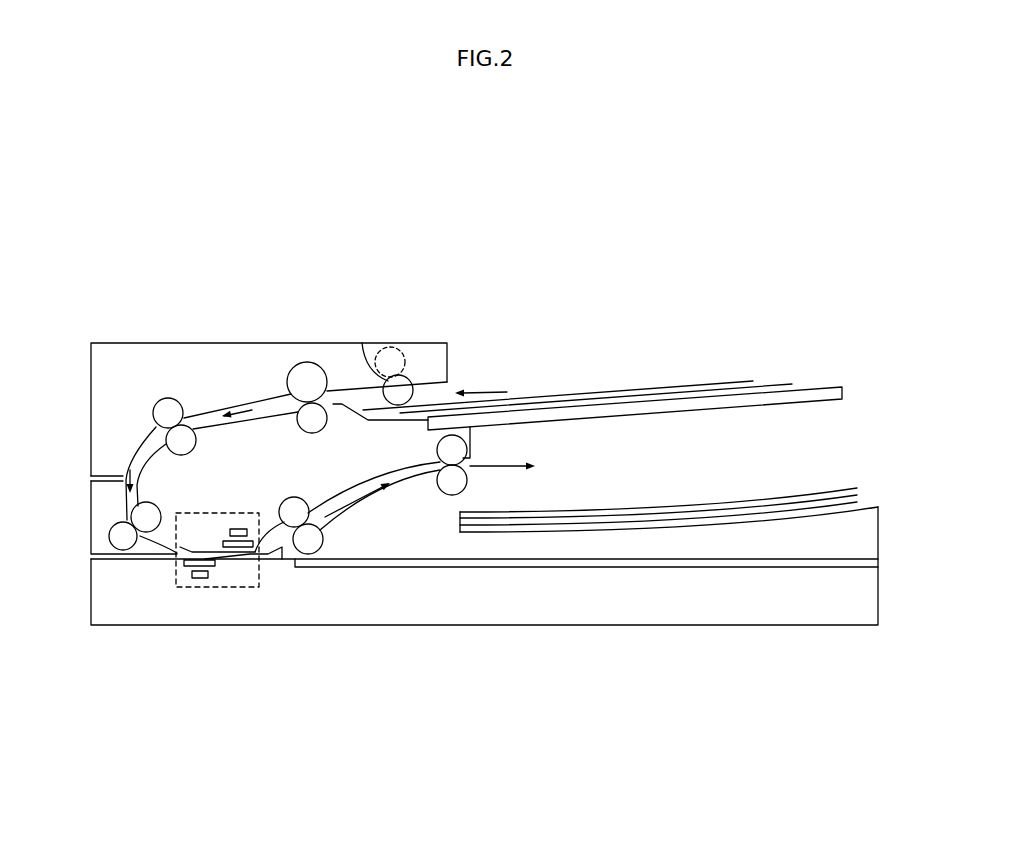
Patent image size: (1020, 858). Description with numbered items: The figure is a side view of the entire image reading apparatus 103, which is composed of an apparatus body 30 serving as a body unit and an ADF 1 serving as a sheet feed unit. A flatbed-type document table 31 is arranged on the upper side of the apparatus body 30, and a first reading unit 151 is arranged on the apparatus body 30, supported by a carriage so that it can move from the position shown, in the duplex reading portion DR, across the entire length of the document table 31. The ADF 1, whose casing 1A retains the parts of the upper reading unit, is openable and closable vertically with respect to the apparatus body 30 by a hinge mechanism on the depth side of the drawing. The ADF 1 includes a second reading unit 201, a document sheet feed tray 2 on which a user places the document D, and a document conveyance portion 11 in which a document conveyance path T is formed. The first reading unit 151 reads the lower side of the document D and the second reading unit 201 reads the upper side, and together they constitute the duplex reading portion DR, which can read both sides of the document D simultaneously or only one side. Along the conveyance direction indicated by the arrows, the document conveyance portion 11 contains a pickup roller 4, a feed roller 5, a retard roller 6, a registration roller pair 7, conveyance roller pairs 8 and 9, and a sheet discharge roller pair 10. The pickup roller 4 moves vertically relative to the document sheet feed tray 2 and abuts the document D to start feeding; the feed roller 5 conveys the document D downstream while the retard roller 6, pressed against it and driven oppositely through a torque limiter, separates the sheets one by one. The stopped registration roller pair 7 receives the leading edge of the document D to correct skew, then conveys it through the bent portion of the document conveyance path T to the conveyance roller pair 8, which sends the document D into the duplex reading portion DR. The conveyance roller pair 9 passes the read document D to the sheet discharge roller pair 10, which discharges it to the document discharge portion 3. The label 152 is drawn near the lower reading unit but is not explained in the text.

The ADF 1 is at (868, 411).
The casing 1A is at (198, 343).
The document sheet feed tray 2 is at (765, 405).
The document discharge portion 3 is at (867, 517).
The pickup roller 4 is at (376, 366).
The feed roller 5 is at (307, 362).
The retard roller 6 is at (316, 433).
The registration roller pair 7 is at (168, 398).
The conveyance roller pair 8 is at (109, 531).
The conveyance roller pair 9 is at (293, 497).
The sheet discharge roller pair 10 is at (452, 495).
The document conveyance portion 11 is at (140, 338).
The apparatus body 30 is at (853, 643).
The document table 31 is at (575, 560).
The image reading apparatus 103 is at (455, 328).
The first reading unit 151 is at (199, 578).
The reading glass 152 is at (181, 564).
The second reading unit 201 is at (238, 529).
The document D is at (608, 390).
The document conveyance path T is at (125, 448).
The duplex reading portion DR is at (258, 600).